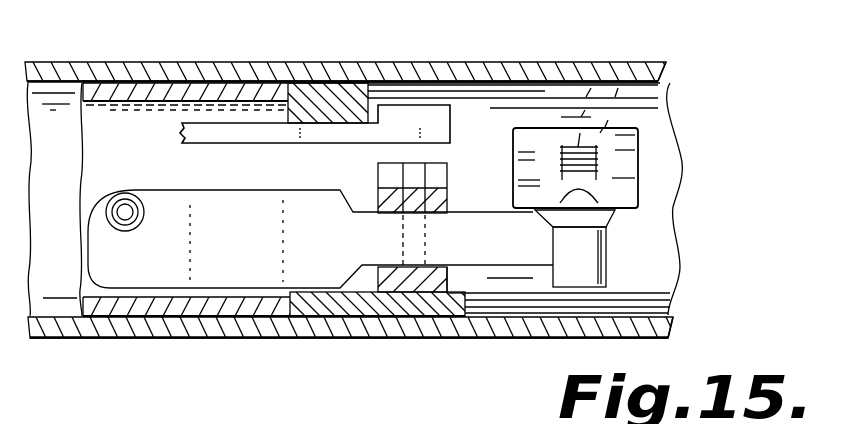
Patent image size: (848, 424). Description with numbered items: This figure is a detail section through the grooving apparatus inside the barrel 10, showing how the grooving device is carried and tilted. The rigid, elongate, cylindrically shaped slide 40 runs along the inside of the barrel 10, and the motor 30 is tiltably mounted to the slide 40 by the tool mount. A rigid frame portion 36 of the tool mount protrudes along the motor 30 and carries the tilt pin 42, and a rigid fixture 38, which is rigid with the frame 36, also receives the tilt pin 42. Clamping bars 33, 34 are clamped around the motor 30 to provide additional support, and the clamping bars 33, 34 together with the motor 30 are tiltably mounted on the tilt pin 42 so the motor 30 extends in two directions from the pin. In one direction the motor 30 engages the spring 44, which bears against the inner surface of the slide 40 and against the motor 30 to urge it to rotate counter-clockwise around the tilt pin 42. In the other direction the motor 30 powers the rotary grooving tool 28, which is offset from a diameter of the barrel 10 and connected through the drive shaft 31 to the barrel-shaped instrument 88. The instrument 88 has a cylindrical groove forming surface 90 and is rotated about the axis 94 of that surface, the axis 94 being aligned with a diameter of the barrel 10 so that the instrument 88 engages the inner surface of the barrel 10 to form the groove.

The barrel 10 is at (385, 72).
The rotary grooving tool 28 is at (585, 240).
The motor 30 is at (250, 253).
The drive shaft 31 is at (598, 64).
The clamping bar 33 is at (447, 207).
The clamping bar 34 is at (437, 288).
The rigid frame portion 36 is at (247, 135).
The rigid fixture 38 is at (440, 177).
The slide 40 is at (167, 312).
The tilt pin 42 is at (402, 315).
The spring 44 is at (130, 193).
The barrel-shaped instrument 88 is at (537, 147).
The cylindrical groove forming surface 90 is at (648, 188).
The axis 94 is at (636, 56).